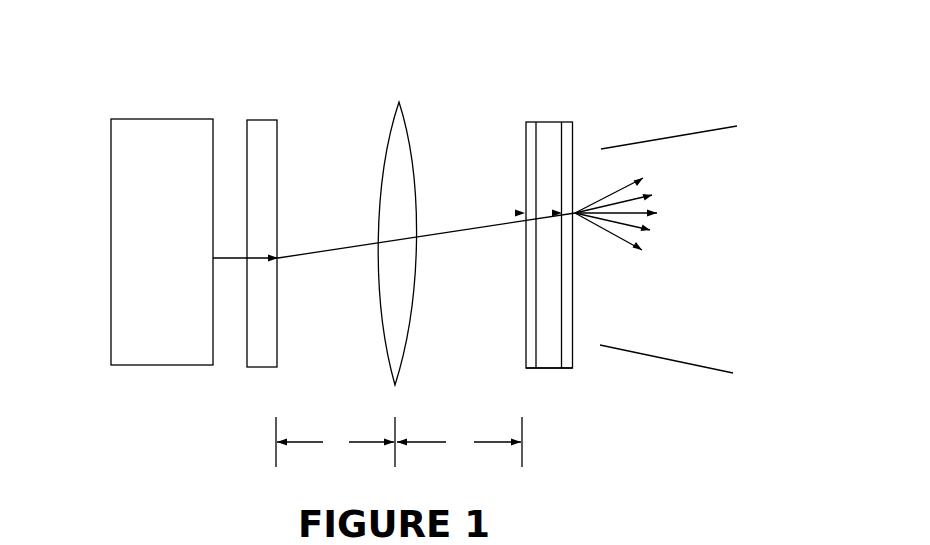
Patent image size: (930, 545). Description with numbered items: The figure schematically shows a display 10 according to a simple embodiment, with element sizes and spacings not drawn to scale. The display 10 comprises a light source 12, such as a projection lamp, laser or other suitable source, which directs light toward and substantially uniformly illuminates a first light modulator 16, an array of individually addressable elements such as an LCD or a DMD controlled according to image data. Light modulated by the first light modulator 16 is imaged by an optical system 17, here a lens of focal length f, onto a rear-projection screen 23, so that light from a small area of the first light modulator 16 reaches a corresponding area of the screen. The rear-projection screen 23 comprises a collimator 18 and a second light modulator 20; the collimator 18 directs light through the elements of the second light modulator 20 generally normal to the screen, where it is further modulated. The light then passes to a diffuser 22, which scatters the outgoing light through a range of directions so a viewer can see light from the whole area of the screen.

The display 10 is at (148, 52).
The light source 12 is at (162, 118).
The first light modulator 16 is at (264, 119).
The optical system 17 is at (399, 102).
The collimator 18 is at (527, 368).
The second light modulator 20 is at (552, 122).
The diffuser 22 is at (568, 122).
The rear-projection screen 23 is at (540, 62).